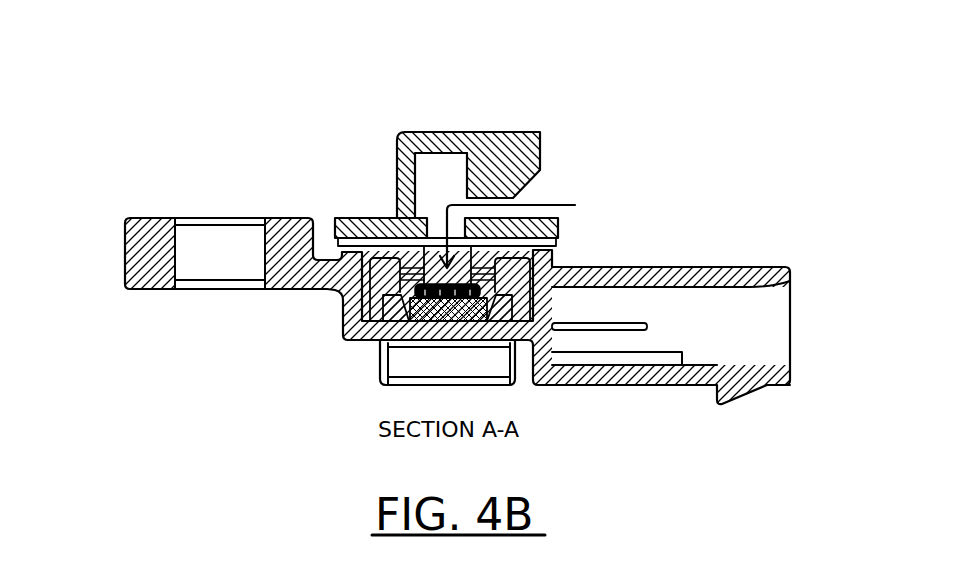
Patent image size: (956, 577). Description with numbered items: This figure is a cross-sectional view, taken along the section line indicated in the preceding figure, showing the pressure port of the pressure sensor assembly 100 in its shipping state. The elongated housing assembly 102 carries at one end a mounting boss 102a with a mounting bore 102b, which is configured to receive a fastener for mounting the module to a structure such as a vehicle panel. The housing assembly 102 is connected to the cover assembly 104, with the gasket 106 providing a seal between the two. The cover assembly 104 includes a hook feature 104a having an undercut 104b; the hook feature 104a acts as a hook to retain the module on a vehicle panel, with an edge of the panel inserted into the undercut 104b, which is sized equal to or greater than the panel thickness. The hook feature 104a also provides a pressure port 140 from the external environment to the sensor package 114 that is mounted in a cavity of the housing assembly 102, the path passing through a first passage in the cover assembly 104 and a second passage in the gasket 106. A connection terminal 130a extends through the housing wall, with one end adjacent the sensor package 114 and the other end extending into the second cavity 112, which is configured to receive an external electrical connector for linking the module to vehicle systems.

The pressure sensor assembly 100 is at (338, 50).
The housing assembly 102 is at (663, 385).
The mounting boss 102a is at (123, 238).
The mounting bore 102b is at (217, 233).
The cover assembly 104 is at (383, 217).
The hook feature 104a is at (508, 131).
The undercut 104b is at (487, 217).
The gasket 106 is at (557, 246).
The second cavity 112 is at (780, 328).
The sensor package 114 is at (380, 345).
The connection terminal 130a is at (647, 327).
The pressure port 140 is at (548, 205).